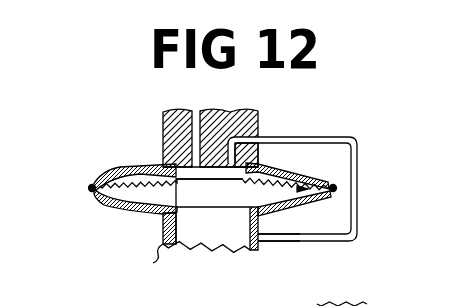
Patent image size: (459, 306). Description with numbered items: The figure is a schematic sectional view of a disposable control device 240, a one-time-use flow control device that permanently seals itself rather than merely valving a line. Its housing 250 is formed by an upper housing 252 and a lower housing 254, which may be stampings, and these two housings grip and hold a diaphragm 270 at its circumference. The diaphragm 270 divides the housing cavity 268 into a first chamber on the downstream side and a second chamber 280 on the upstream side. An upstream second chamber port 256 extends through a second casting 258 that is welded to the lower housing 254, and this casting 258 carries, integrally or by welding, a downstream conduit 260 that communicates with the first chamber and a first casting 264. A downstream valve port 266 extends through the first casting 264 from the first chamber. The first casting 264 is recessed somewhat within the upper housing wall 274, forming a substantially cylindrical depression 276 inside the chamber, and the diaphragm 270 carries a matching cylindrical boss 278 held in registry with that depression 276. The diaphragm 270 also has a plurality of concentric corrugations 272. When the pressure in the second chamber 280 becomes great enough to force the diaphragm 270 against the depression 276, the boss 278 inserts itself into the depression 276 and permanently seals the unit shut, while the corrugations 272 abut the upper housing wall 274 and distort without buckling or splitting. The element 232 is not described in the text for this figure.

The base member 232 is at (361, 299).
The disposable control device 240 is at (343, 124).
The housing 250 is at (262, 153).
The upper housing 252 is at (312, 183).
The lower housing 254 is at (297, 240).
The upstream second chamber port 256 is at (240, 234).
The second casting 258 is at (160, 246).
The downstream conduit 260 is at (282, 240).
The first casting 264 is at (258, 124).
The downstream valve port 266 is at (165, 128).
The housing cavity 268 is at (158, 196).
The diaphragm 270 is at (322, 200).
The concentric corrugations 272 is at (122, 182).
The upper housing wall 274 is at (336, 189).
The cylindrical depression 276 is at (158, 167).
The cylindrical boss 278 is at (212, 181).
The second chamber 280 is at (284, 216).